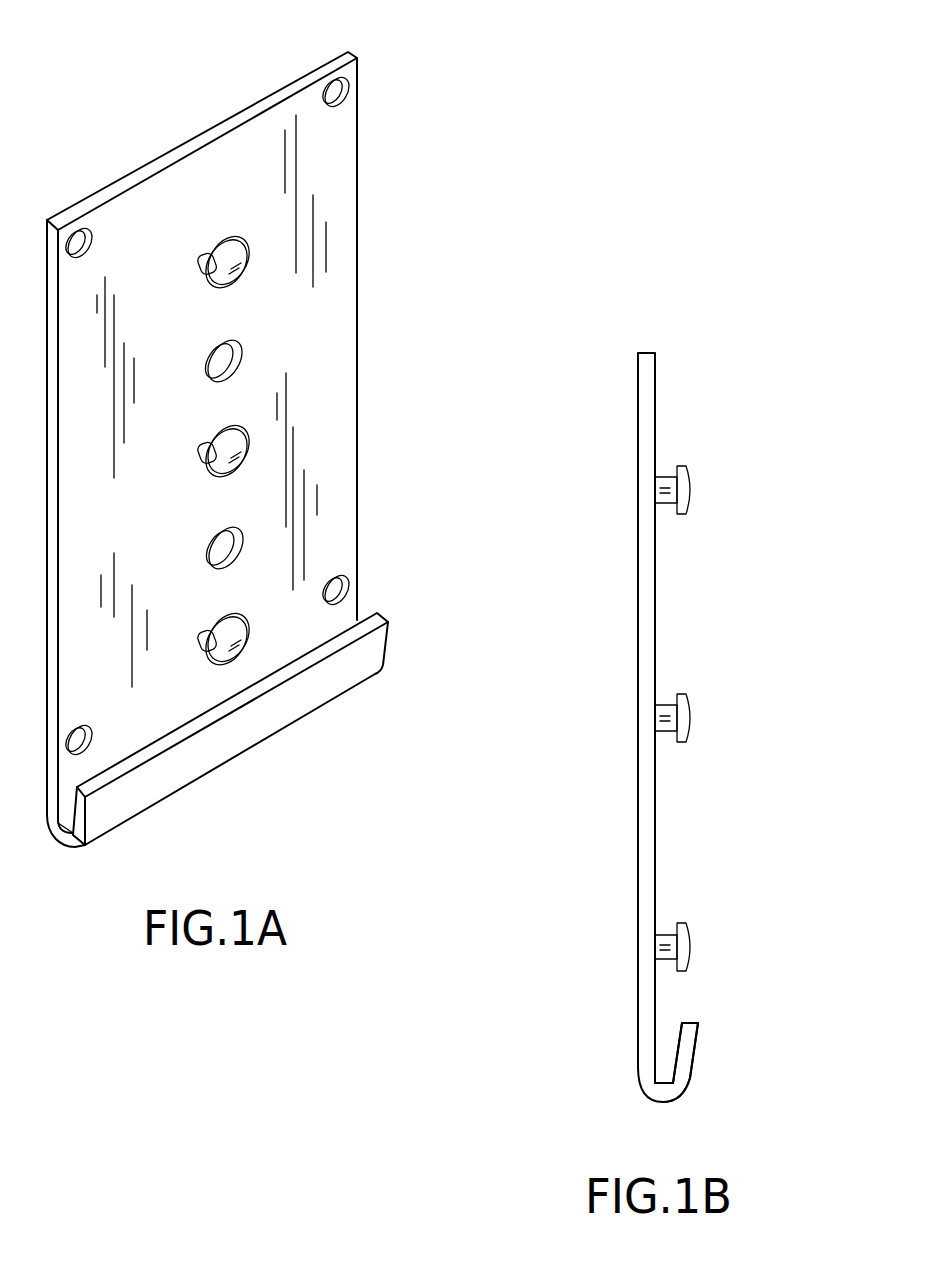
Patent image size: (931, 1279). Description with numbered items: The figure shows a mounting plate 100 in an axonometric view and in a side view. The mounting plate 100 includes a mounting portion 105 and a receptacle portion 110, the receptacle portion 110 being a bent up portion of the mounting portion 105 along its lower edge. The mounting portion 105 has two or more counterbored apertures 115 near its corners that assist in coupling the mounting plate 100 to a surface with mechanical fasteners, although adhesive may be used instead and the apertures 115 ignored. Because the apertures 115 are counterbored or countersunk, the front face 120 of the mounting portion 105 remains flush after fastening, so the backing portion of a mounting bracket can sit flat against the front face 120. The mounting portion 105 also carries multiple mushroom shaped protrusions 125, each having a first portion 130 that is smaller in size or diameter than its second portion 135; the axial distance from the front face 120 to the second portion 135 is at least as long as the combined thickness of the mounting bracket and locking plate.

In FIG. 1A, the mounting plate 100 is at (425, 70).
In FIG. 1B, the mounting plate 100 is at (685, 322).
In FIG. 1A, the mounting portion 105 is at (365, 192).
In FIG. 1A, the receptacle portion 110 is at (393, 607).
In FIG. 1B, the receptacle portion 110 is at (700, 1015).
In FIG. 1A, the counterbored apertures 115 is at (355, 565).
In FIG. 1A, the front face 120 is at (335, 303).
In FIG. 1B, the front face 120 is at (663, 595).
In FIG. 1A, the mushroom shaped protrusions 125 is at (258, 427).
In FIG. 1B, the mushroom shaped protrusions 125 is at (698, 700).
In FIG. 1B, the first portion 130 is at (668, 935).
In FIG. 1B, the second portion 135 is at (693, 935).